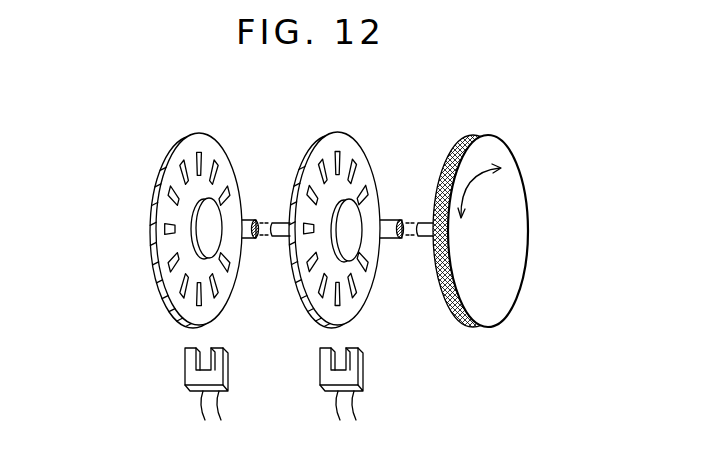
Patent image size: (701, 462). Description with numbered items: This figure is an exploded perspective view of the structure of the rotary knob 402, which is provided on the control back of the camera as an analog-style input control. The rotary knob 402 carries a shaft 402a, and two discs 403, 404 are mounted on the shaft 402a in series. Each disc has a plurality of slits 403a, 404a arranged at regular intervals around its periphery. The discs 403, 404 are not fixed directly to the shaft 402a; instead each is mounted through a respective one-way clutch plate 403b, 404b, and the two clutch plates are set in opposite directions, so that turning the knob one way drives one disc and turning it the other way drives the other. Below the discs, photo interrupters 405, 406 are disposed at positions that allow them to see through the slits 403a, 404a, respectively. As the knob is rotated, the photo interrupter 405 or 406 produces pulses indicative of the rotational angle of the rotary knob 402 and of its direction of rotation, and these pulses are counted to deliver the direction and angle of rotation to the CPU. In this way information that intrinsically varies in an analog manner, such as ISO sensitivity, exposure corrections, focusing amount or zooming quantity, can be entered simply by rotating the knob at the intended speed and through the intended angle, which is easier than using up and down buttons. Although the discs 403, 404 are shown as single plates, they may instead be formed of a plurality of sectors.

The rotary knob 402 is at (503, 164).
The shaft 402a is at (387, 227).
The disc 403 is at (359, 218).
The slits 403a is at (355, 292).
The one-way clutch plate 403b is at (350, 208).
The disc 404 is at (186, 214).
The slits 404a is at (160, 196).
The one-way clutch plate 404b is at (213, 208).
The photo interrupter 405 is at (360, 360).
The photo interrupter 406 is at (221, 360).